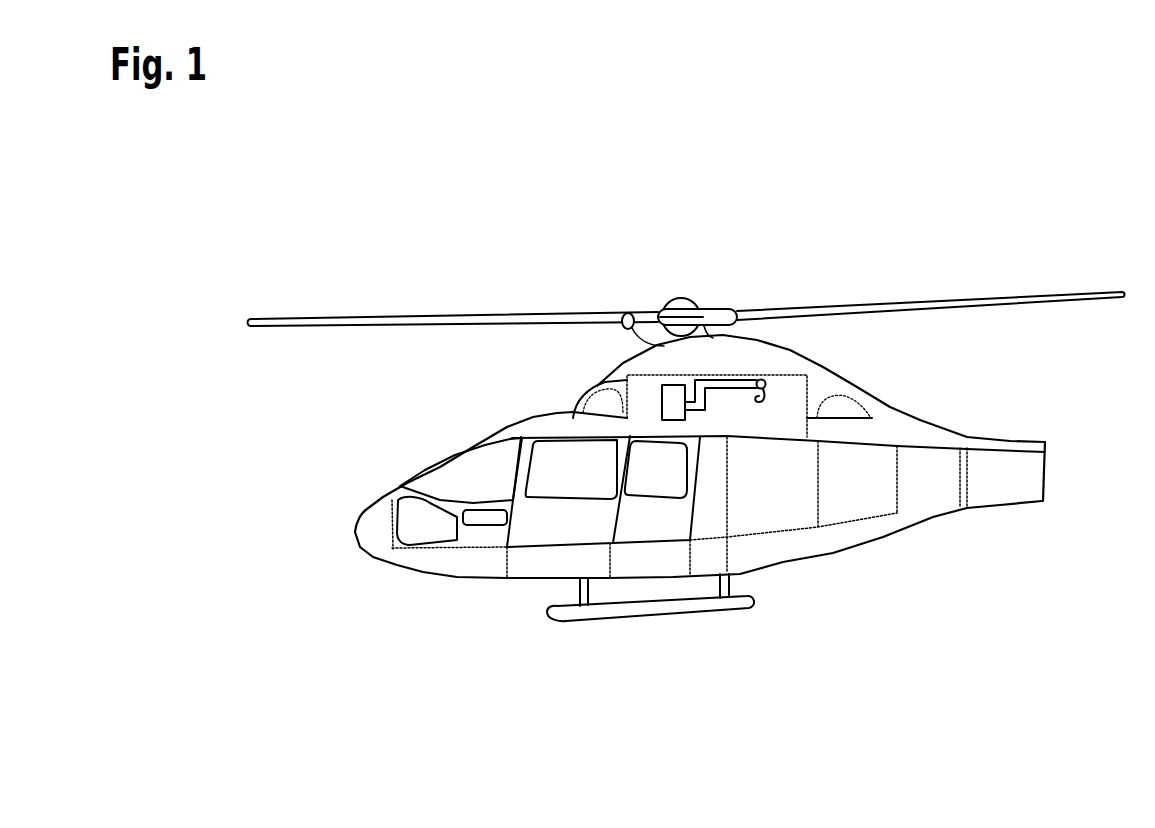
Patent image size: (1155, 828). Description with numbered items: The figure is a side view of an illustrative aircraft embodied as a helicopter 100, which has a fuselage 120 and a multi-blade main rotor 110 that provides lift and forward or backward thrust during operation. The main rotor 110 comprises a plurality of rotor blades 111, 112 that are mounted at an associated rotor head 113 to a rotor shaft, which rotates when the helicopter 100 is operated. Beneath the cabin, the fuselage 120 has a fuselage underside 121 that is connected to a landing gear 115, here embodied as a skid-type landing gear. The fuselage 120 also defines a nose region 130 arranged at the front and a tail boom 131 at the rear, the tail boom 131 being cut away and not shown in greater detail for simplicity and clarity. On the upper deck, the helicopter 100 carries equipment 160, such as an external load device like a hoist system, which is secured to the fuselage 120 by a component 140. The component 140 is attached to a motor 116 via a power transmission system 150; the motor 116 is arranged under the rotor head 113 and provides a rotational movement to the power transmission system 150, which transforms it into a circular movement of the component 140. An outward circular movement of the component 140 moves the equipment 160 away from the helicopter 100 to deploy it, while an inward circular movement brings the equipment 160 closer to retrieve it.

The helicopter 100 is at (292, 198).
The multi-blade main rotor 110 is at (952, 216).
The rotor blade 111 is at (340, 321).
The rotor blade 112 is at (938, 303).
The rotor head 113 is at (710, 294).
The landing gear 115 is at (642, 614).
The motor 116 is at (673, 402).
The fuselage 120 is at (800, 472).
The fuselage underside 121 is at (547, 584).
The nose region 130 is at (341, 533).
The tail boom 131 is at (1005, 478).
The component 140 is at (741, 370).
The power transmission system 150 is at (680, 366).
The equipment 160 is at (778, 373).